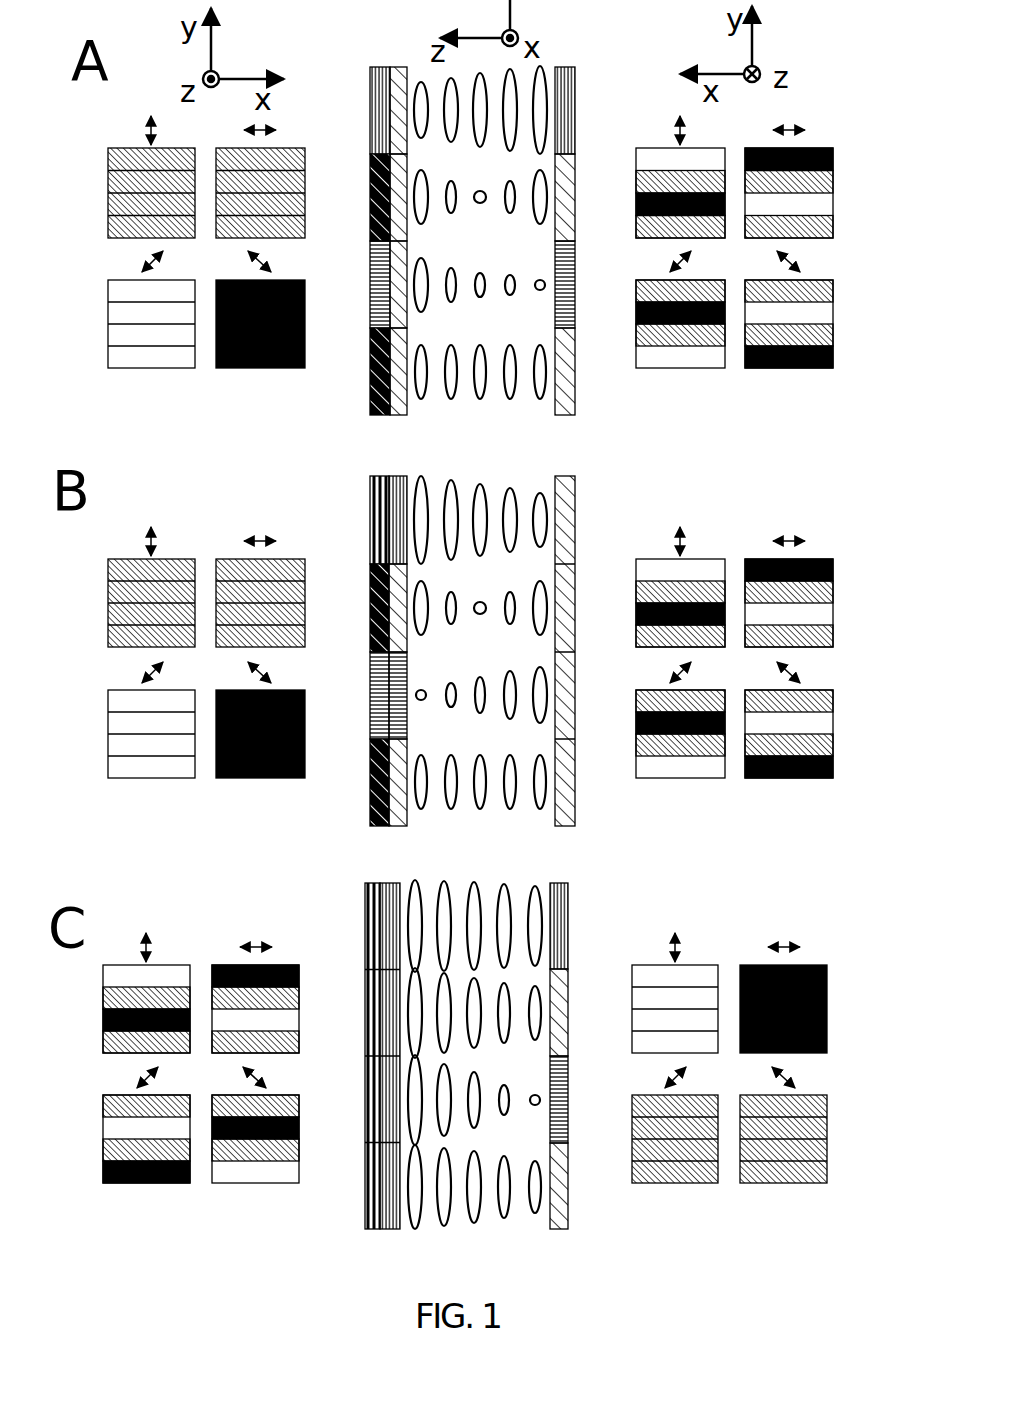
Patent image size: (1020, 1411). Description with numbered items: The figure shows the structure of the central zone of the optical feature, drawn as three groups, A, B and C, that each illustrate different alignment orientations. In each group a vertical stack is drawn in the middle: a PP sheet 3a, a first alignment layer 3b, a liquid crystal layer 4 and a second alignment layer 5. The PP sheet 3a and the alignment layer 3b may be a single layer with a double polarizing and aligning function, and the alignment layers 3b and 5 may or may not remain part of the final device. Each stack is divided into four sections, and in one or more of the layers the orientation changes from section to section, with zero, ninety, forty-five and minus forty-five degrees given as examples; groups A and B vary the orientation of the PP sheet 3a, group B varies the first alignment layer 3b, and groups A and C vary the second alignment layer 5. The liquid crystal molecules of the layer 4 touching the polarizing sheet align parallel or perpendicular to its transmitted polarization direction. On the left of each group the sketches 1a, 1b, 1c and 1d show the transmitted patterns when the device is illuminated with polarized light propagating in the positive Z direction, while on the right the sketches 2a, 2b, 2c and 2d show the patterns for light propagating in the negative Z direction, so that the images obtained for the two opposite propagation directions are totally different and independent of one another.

The transmitted pattern sketch 1a is at (122, 600).
The transmitted pattern sketch 1b is at (278, 600).
The transmitted pattern sketch 1c is at (122, 731).
The transmitted pattern sketch 1d is at (278, 731).
The transmitted pattern sketch 2a is at (653, 600).
The transmitted pattern sketch 2b is at (808, 600).
The transmitted pattern sketch 2c is at (650, 731).
The transmitted pattern sketch 2d is at (808, 731).
The PP sheet 3a is at (369, 421).
The alignment layer 3b is at (395, 421).
The liquid crystal layer 4 is at (490, 420).
The second alignment layer 5 is at (577, 420).